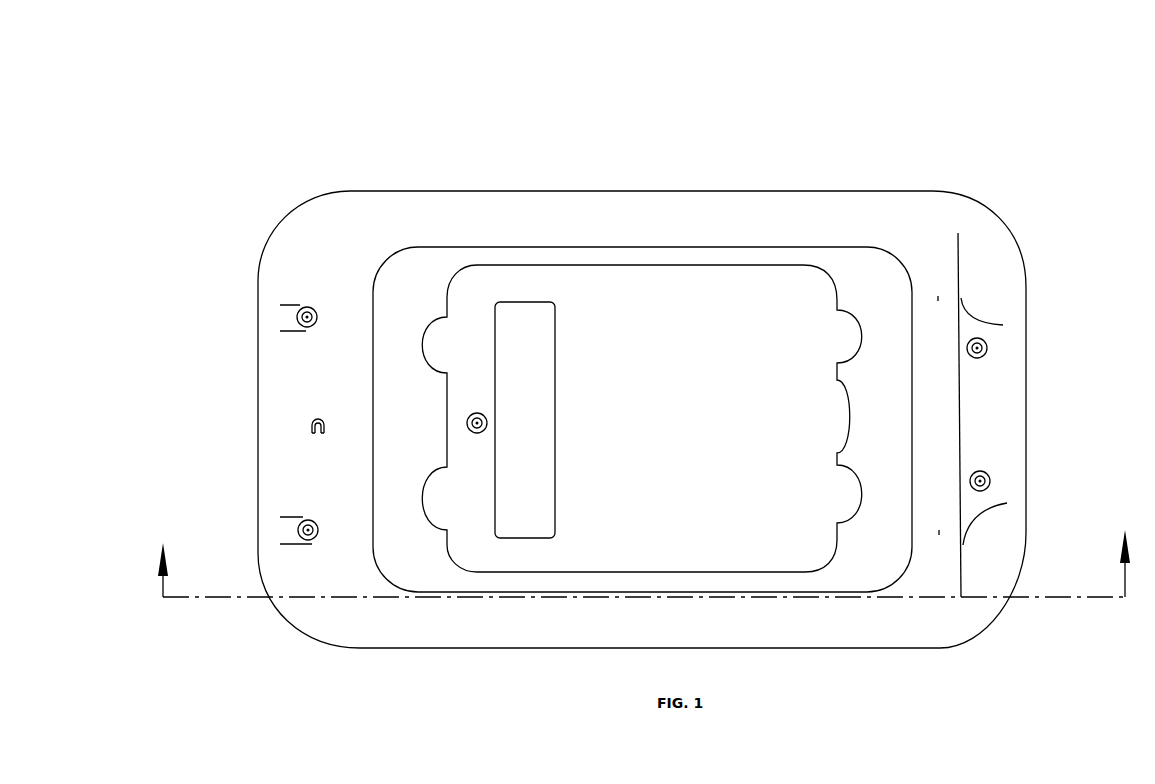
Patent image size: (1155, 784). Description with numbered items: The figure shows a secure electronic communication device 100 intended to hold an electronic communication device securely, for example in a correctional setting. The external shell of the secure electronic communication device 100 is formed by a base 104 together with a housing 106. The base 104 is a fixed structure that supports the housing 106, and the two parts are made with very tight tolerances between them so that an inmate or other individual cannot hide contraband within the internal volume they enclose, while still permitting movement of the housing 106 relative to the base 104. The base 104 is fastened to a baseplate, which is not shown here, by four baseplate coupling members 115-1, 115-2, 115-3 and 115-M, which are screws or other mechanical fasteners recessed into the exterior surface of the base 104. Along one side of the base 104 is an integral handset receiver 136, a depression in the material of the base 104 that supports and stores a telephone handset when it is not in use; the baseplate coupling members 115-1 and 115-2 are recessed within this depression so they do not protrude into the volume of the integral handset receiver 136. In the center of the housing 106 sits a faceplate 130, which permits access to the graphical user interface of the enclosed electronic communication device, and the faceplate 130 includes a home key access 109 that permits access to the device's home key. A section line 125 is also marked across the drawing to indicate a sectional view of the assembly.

The secure electronic communication device 100 is at (177, 68).
The base 104 is at (811, 213).
The housing 106 is at (850, 262).
The home key access 109 is at (469, 415).
The baseplate coupling member 115-1 is at (987, 471).
The baseplate coupling member 115-2 is at (985, 338).
The baseplate coupling member 115-3 is at (298, 325).
The baseplate coupling member 115-M is at (310, 541).
The section line A-A 125 is at (160, 600).
The faceplate 130 is at (677, 403).
The integral handset receiver 136 is at (985, 563).